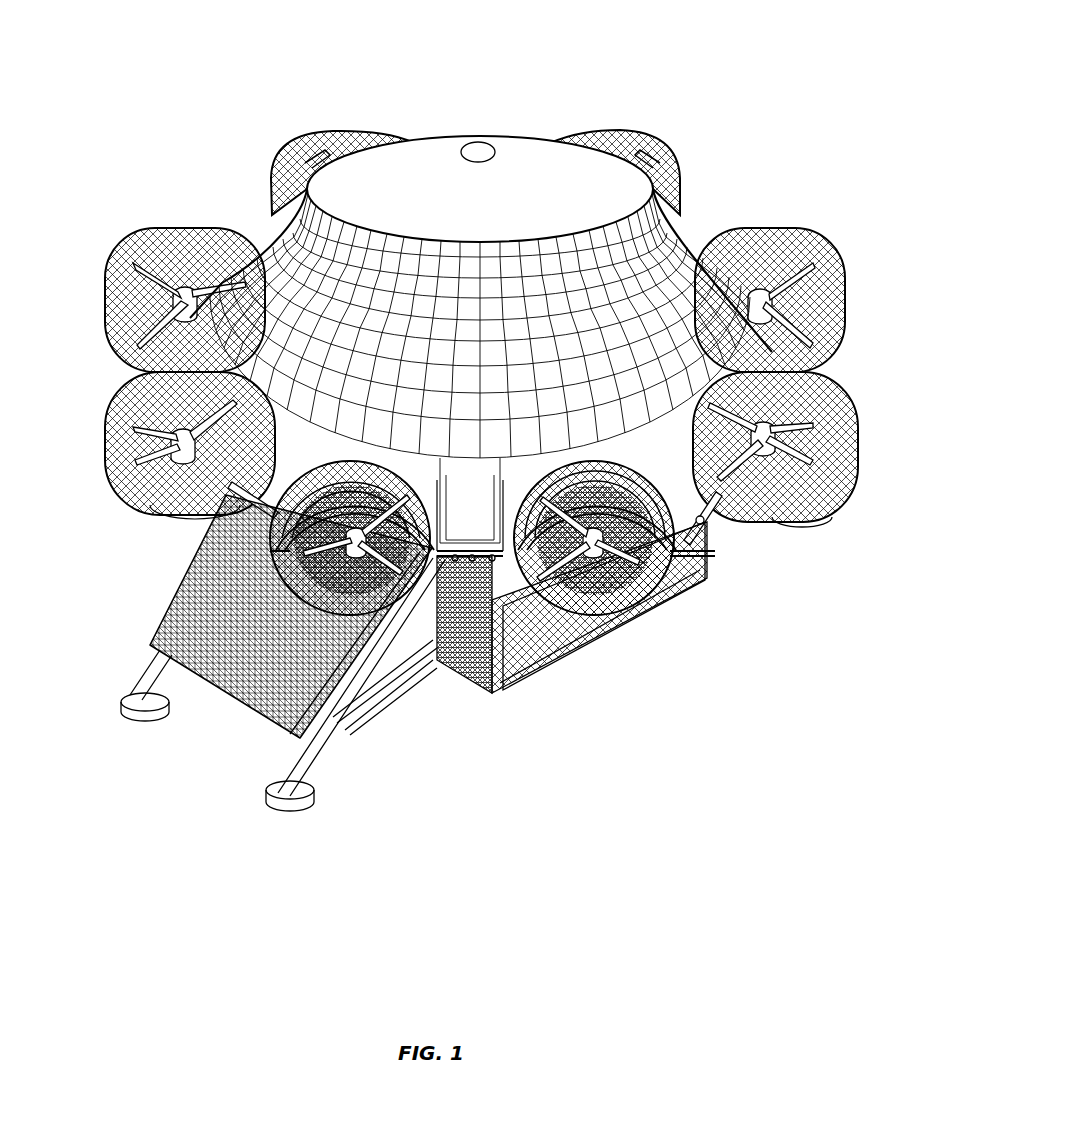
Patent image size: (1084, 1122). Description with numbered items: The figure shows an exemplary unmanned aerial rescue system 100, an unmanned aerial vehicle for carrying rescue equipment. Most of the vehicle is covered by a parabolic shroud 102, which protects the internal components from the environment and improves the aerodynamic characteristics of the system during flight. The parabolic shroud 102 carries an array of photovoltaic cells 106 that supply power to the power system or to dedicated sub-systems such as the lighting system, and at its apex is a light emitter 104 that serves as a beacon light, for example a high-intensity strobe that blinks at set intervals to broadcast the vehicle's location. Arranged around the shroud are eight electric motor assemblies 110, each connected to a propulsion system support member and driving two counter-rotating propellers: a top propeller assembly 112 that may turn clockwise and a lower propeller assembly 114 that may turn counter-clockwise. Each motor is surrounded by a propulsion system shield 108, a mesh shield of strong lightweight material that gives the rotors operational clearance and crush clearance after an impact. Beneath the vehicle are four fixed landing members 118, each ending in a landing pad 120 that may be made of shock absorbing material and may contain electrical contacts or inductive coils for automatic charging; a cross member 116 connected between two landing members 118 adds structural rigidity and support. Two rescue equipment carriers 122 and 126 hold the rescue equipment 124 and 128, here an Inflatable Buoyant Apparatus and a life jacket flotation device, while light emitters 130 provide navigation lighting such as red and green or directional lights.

The unmanned aerial rescue system 100 is at (708, 66).
The parabolic shroud 102 is at (514, 152).
The light emitter 104 is at (478, 143).
The array of photovoltaic cells 106 is at (683, 233).
The propulsion system shield 108 is at (112, 480).
The electric motor assembly 110 is at (130, 500).
The top propeller assembly 112 is at (140, 426).
The lower propeller assembly 114 is at (212, 498).
The cross member 116 is at (390, 692).
The landing member 118 is at (318, 748).
The landing pad 120 is at (262, 805).
The rescue equipment carrier 122 is at (122, 645).
The rescue equipment 124 is at (243, 690).
The rescue equipment carrier 126 is at (503, 690).
The rescue equipment 128 is at (573, 637).
The light emitters 130 is at (718, 522).